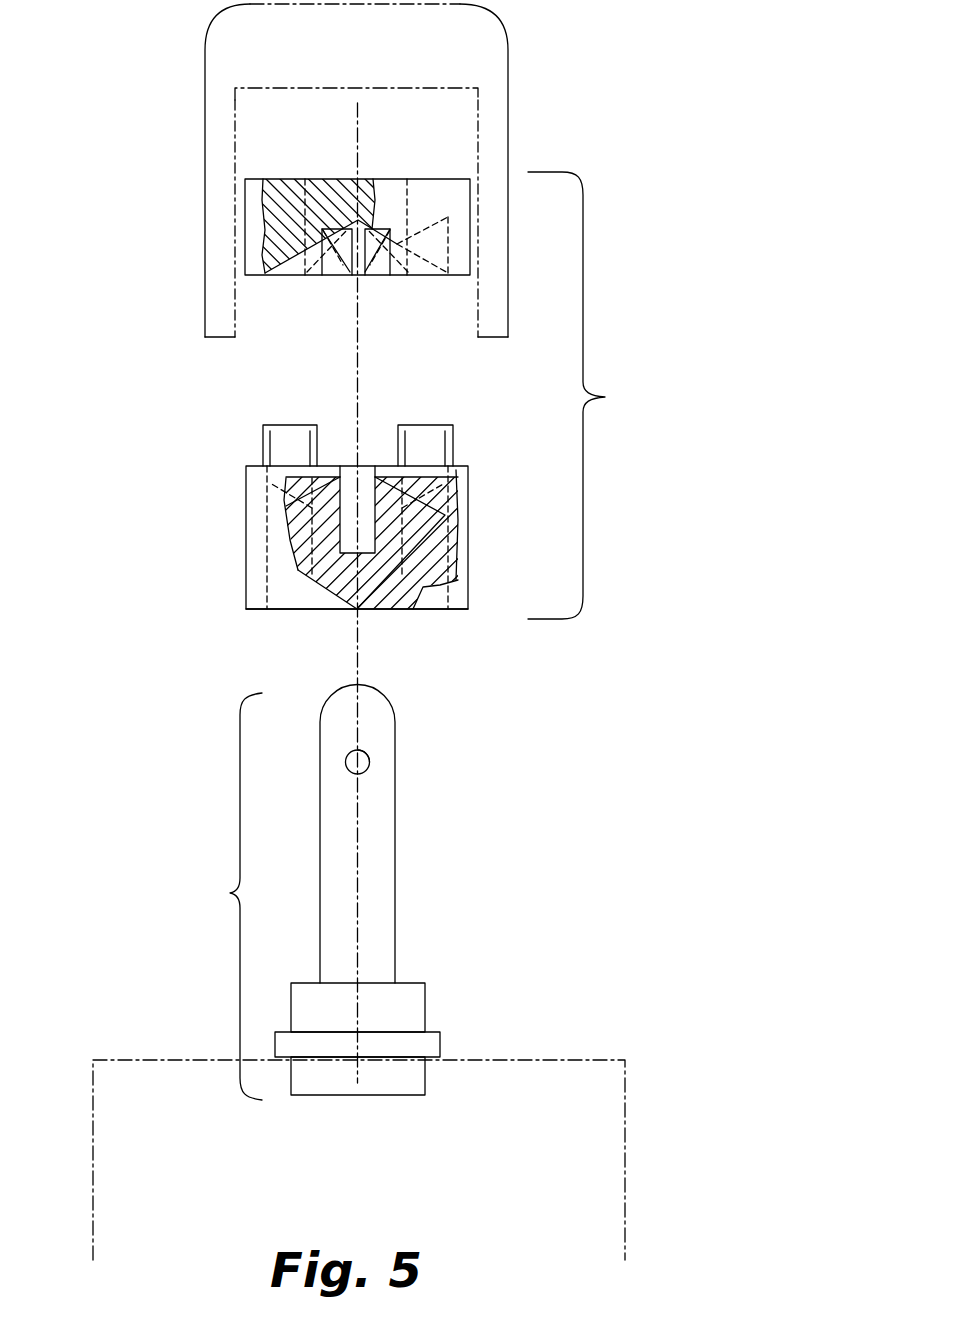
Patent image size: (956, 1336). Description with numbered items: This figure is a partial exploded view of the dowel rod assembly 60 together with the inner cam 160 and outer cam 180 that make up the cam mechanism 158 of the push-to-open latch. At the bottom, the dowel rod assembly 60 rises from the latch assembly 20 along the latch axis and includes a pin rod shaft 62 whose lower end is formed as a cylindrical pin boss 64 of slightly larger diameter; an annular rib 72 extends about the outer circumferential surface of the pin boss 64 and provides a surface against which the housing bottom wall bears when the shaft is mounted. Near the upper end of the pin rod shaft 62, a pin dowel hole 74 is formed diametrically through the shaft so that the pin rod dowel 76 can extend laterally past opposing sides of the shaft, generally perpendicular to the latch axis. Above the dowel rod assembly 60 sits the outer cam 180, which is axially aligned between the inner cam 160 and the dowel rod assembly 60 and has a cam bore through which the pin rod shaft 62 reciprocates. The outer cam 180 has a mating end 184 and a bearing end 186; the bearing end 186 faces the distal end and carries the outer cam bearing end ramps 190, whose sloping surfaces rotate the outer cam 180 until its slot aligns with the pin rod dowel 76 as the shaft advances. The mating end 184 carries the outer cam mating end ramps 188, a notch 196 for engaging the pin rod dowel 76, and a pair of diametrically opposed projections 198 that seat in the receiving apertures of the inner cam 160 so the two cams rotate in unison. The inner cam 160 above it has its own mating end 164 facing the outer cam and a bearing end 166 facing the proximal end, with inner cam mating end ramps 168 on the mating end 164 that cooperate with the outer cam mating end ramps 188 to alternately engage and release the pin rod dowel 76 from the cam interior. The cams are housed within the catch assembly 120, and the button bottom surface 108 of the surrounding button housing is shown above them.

The latch assembly 20 is at (625, 1124).
The dowel rod assembly 60 is at (220, 896).
The pin rod shaft 62 is at (383, 823).
The pin boss 64 is at (420, 1002).
The annular rib 72 is at (435, 1050).
The pin dowel hole 74 is at (366, 753).
The pin rod dowel 76 is at (369, 762).
The button bottom surface 108 is at (437, 88).
The catch assembly 120 is at (511, 63).
The cam mechanism 158 is at (592, 395).
The inner cam 160 is at (255, 228).
The mating end 164 is at (265, 275).
The bearing end 166 is at (280, 178).
The inner cam mating end ramps 168 is at (375, 275).
The outer cam 180 is at (275, 545).
The mating end 184 is at (250, 465).
The bearing end 186 is at (260, 608).
The outer cam mating end ramps 188 is at (290, 480).
The outer cam bearing end ramps 190 is at (458, 583).
The notch 196 is at (373, 609).
The projections 198 is at (280, 425).